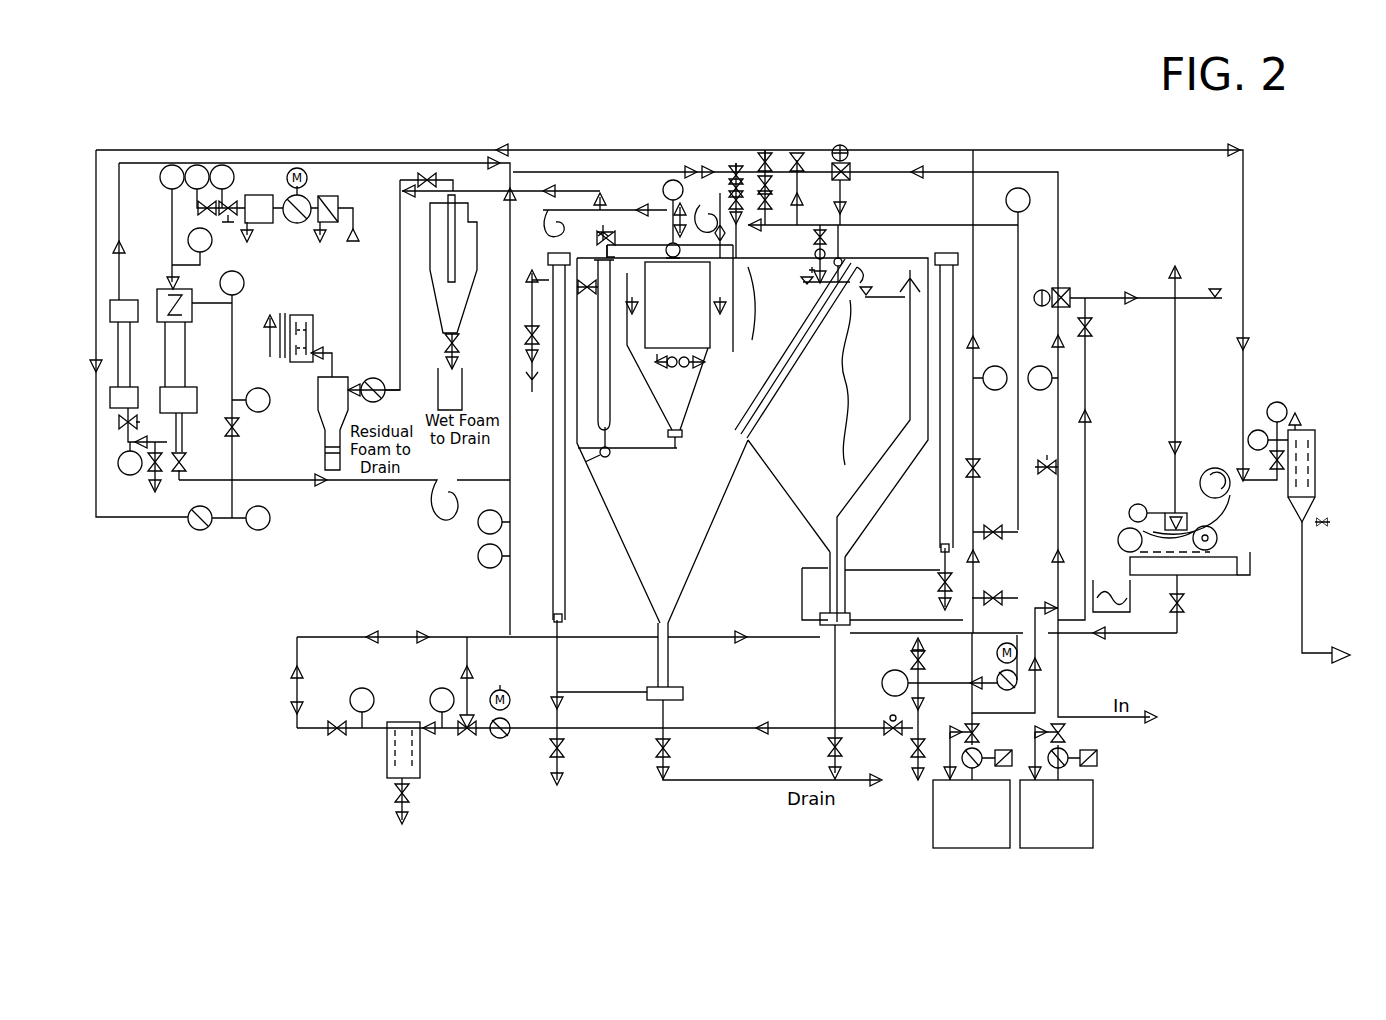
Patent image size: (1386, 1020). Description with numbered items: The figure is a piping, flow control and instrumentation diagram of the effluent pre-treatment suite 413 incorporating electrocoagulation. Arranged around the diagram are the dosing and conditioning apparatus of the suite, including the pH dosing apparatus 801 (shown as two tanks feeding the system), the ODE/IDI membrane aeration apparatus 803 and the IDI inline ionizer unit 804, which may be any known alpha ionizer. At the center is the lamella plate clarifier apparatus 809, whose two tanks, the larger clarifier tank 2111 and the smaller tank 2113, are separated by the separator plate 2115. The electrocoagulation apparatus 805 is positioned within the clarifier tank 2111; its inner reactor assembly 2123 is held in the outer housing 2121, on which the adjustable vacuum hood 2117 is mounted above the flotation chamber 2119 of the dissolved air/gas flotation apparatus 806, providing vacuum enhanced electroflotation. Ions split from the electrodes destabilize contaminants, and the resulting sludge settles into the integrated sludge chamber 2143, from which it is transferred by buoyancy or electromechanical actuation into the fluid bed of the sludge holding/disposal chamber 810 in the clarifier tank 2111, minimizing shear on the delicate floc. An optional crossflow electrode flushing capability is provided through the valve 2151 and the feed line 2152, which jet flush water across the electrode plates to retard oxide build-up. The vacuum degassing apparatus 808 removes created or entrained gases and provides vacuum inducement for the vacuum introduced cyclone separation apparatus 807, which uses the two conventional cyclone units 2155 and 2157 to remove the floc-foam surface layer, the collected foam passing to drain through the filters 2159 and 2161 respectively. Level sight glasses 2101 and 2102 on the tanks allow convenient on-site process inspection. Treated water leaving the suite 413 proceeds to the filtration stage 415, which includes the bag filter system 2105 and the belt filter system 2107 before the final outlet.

The pre-treatment suite 413 is at (655, 114).
The vacuum introduced cyclone separation apparatus 807 is at (462, 187).
The vacuum hood 2117 is at (603, 225).
The dissolved air/gas flotation apparatus 806 is at (690, 165).
The valve 2151 is at (737, 160).
The vacuum degassing apparatus 808 is at (666, 231).
The flotation chamber 2119 is at (633, 250).
The clarifier tank 2111 is at (768, 299).
The tank 2113 is at (905, 250).
The feed line 2152 is at (769, 303).
The inner reactor assembly 2123 is at (700, 327).
The electrocoagulation apparatus 805 is at (684, 366).
The outer housing 2121 is at (620, 347).
The integrated sludge chamber 2143 is at (684, 436).
The separator plate 2115 is at (778, 385).
The IDI inline ionizer unit 804 is at (132, 340).
The ODE/IDI membrane aeration apparatus 803 is at (178, 342).
The filter 2161 is at (330, 300).
The cyclone unit 2157 is at (345, 378).
The cyclone unit 2155 is at (478, 263).
The filter 2159 is at (465, 393).
The sludge holding/disposal chamber 810 is at (655, 563).
The level sight glass 2101 is at (562, 618).
The lamella plate clarifier apparatus 809 is at (746, 481).
The level sight glass 2102 is at (938, 498).
The bag filter system 2105 is at (1311, 429).
The filtration stage 415 is at (1276, 559).
The belt filter system 2107 is at (1212, 600).
The pH dosing apparatus 801 is at (993, 830).